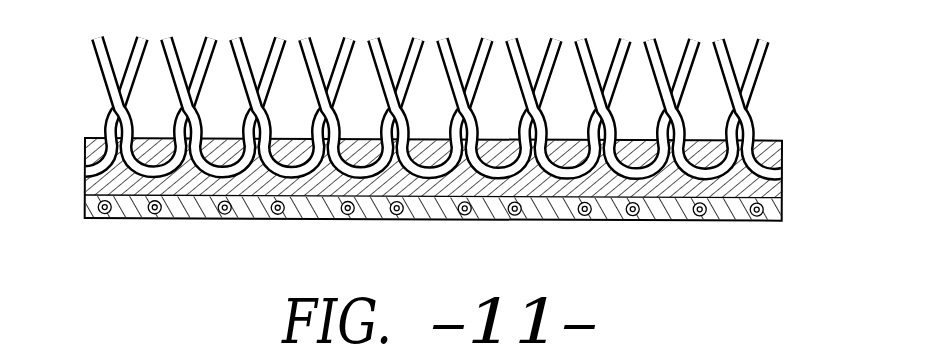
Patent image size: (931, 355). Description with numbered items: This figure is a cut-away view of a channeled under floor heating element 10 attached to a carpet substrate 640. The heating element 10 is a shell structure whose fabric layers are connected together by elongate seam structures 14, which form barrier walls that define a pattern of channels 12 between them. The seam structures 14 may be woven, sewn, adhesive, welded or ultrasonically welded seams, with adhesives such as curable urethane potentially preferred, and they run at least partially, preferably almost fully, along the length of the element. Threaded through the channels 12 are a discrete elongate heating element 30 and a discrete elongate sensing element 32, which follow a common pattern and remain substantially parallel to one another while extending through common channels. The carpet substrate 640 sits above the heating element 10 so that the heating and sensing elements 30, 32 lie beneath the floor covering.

The under floor heating element 10 is at (785, 201).
The channels 12 is at (85, 206).
The elongate seam structures 14 is at (679, 192).
The elongate heating element 30 is at (106, 220).
The elongate sensing element 32 is at (146, 218).
The carpet substrate 640 is at (763, 80).